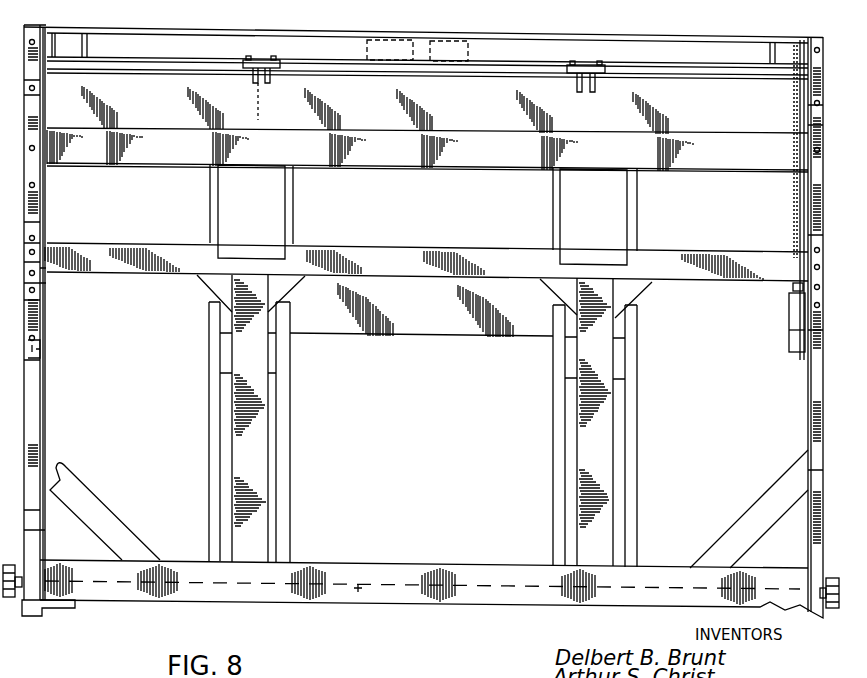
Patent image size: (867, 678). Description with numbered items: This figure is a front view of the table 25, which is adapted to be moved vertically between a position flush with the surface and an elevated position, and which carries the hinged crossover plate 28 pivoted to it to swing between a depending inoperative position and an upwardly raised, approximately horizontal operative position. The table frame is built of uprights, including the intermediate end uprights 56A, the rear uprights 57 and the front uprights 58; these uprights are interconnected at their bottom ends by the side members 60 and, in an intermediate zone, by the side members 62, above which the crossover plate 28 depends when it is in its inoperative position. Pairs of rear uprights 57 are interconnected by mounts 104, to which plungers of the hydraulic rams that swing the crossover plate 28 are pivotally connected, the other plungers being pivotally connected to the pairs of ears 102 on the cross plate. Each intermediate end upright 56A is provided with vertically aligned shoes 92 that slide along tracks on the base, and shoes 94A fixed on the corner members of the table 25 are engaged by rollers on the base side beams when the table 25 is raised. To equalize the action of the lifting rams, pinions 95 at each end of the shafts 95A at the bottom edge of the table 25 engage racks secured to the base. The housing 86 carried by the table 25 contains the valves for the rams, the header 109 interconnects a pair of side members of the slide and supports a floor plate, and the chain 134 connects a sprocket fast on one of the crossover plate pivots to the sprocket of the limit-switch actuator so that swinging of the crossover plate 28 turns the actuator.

The hinged plate 28 is at (535, 34).
The ears 102 is at (276, 84).
The rear uprights 57 is at (290, 200).
The side members 62 is at (478, 249).
The chain 134 is at (794, 214).
The shoes 94A is at (43, 268).
The shoes 92 is at (46, 349).
The intermediate end uprights 56A is at (46, 378).
The mounts 104 is at (283, 360).
The housing 86 is at (441, 333).
The header 109 is at (622, 360).
The front uprights 58 is at (262, 504).
The side members 60 is at (393, 569).
The shafts 95A is at (357, 593).
The table 25 is at (404, 604).
The pinions 95 is at (14, 600).